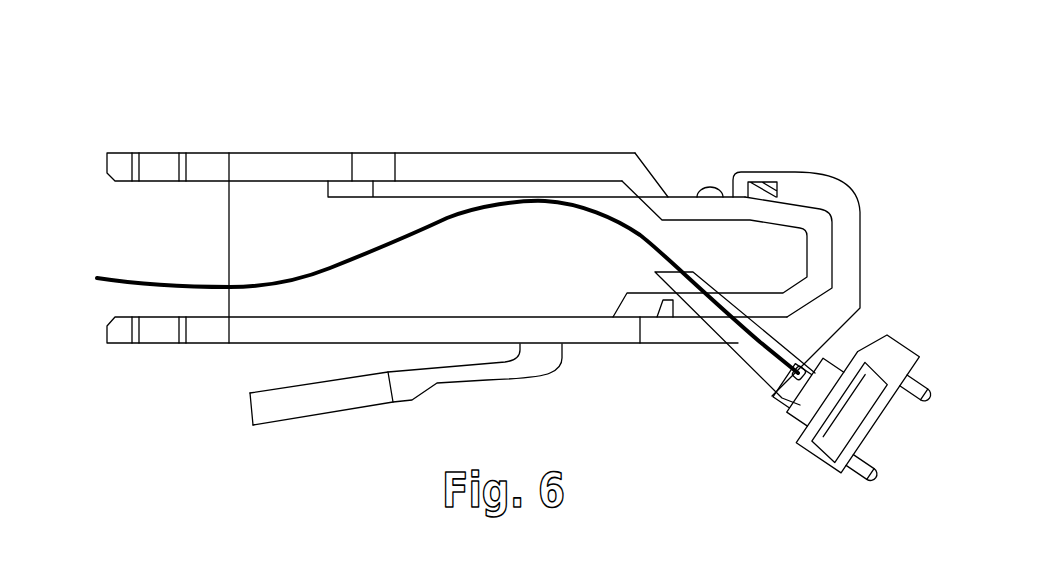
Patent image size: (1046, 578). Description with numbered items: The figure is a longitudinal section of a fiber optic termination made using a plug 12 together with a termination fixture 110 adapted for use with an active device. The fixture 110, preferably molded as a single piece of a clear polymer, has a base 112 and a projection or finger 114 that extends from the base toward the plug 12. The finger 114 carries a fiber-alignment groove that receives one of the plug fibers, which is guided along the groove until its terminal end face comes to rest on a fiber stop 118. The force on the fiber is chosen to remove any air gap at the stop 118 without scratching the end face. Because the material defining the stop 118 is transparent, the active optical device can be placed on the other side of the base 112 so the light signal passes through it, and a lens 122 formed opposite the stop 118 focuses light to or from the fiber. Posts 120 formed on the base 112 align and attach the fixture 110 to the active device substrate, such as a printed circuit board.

The plug 12 is at (560, 140).
The termination fixture 110 is at (799, 425).
The base 112 is at (797, 453).
The finger 114 is at (718, 294).
The fiber stop 118 is at (778, 397).
The posts 120 is at (921, 389).
The lens 122 is at (831, 408).